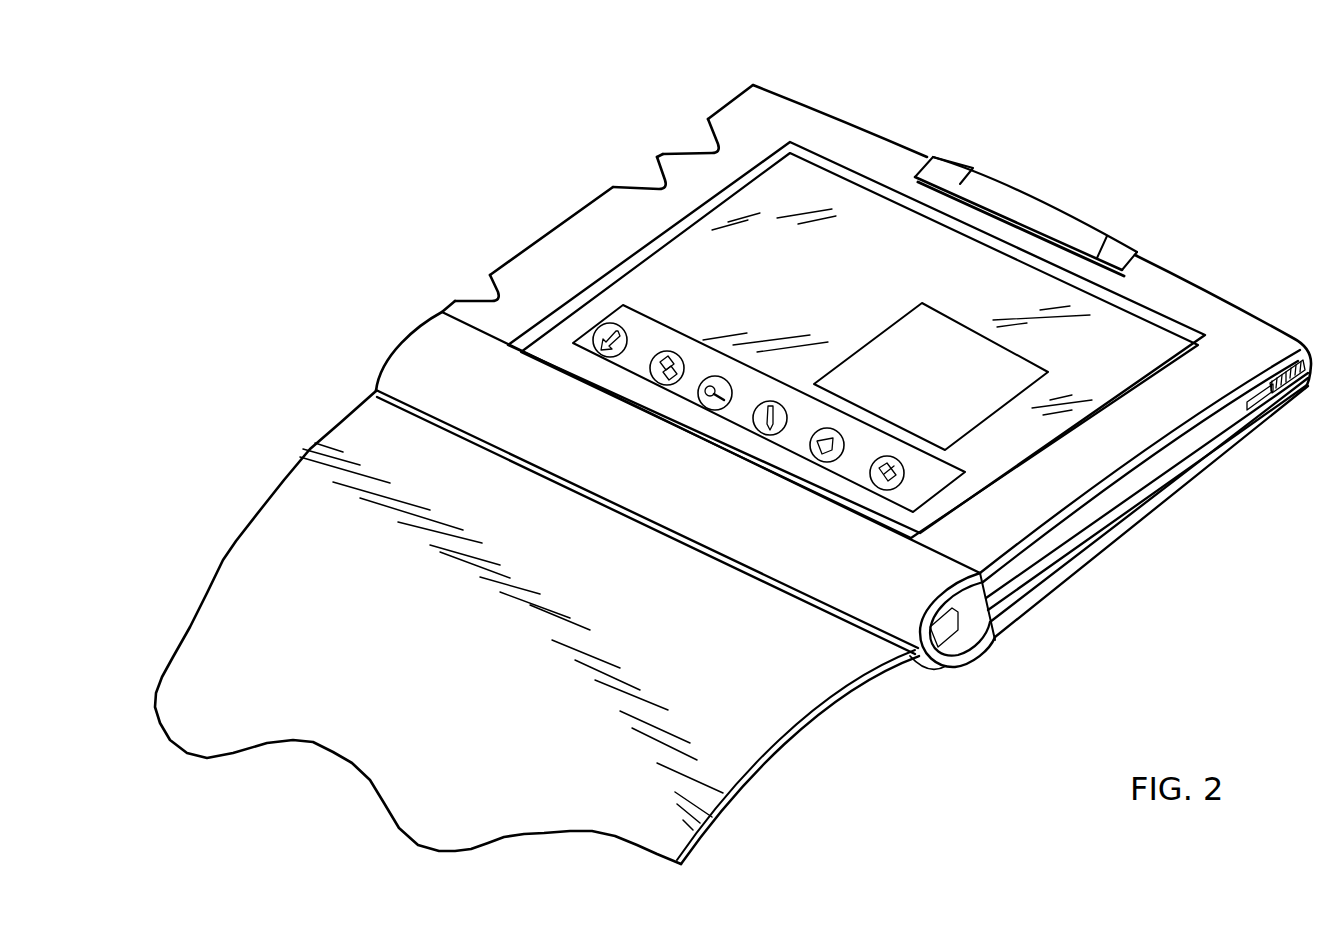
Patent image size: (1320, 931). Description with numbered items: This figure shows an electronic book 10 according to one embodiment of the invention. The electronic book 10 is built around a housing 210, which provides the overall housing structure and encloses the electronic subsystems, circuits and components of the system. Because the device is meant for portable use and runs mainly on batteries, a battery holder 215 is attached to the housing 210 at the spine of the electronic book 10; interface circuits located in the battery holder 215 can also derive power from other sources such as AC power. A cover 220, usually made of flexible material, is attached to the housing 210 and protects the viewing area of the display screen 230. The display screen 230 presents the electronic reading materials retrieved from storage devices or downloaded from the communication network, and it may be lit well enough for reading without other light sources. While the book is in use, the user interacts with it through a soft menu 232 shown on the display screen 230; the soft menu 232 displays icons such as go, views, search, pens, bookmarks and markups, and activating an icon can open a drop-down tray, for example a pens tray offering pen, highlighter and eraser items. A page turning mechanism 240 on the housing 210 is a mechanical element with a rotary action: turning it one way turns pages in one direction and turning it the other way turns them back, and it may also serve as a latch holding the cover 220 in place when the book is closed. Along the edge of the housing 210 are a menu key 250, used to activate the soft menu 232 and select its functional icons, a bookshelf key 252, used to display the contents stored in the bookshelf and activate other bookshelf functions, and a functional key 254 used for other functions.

The electronic book 10 is at (268, 160).
The housing 210 is at (1072, 533).
The battery holder 215 is at (857, 580).
The cover 220 is at (752, 733).
The display screen 230 is at (865, 225).
The soft menu 232 is at (957, 466).
The page turning mechanism 240 is at (1062, 210).
The menu key 250 is at (480, 290).
The bookshelf key 252 is at (692, 145).
The functional key 254 is at (640, 182).